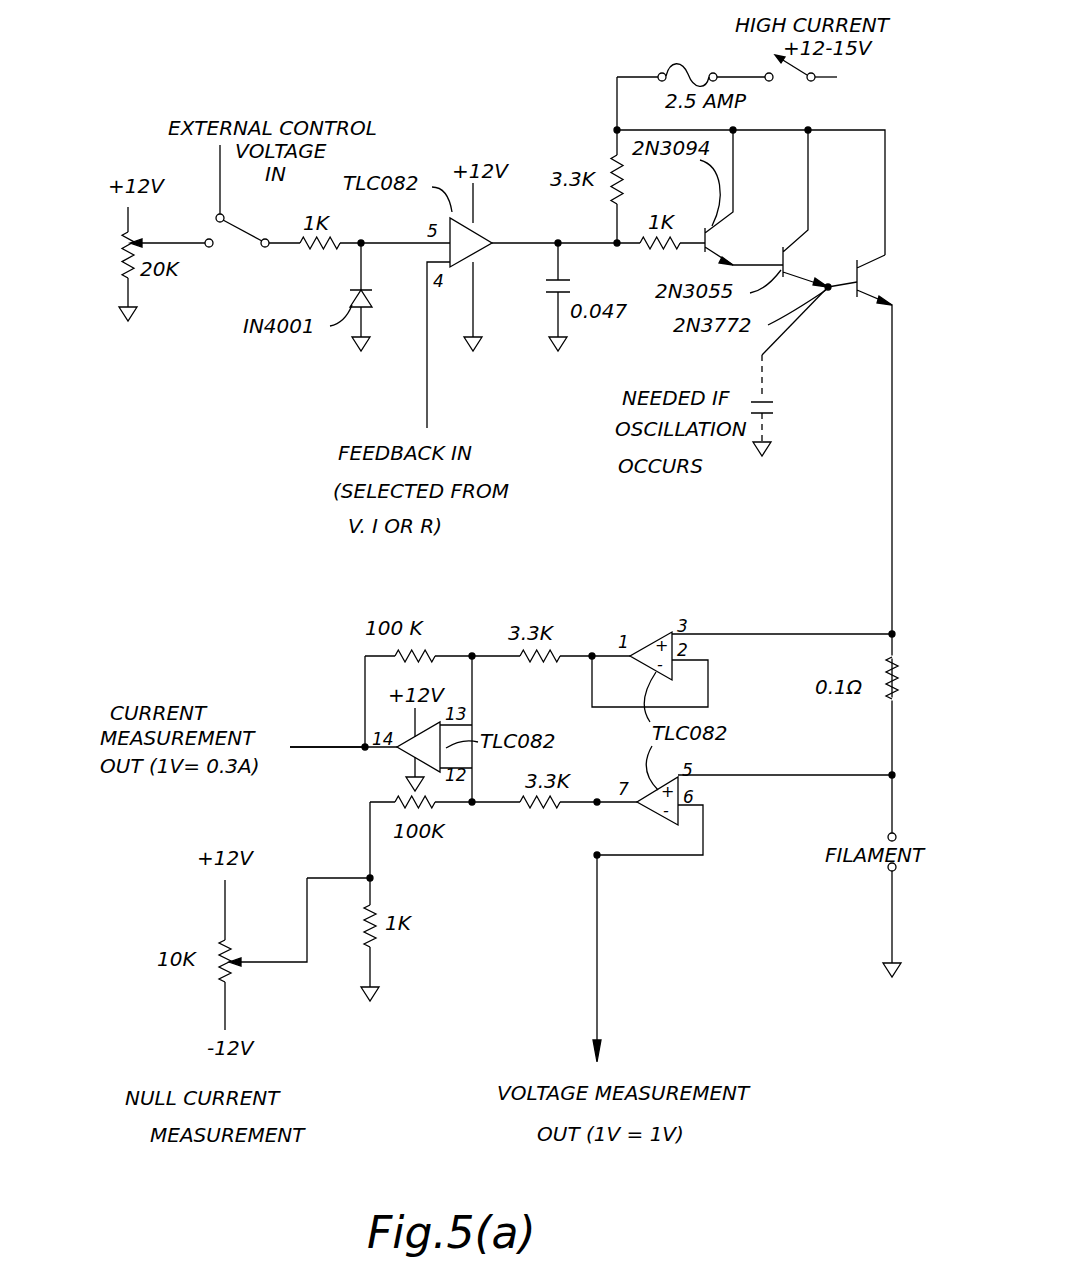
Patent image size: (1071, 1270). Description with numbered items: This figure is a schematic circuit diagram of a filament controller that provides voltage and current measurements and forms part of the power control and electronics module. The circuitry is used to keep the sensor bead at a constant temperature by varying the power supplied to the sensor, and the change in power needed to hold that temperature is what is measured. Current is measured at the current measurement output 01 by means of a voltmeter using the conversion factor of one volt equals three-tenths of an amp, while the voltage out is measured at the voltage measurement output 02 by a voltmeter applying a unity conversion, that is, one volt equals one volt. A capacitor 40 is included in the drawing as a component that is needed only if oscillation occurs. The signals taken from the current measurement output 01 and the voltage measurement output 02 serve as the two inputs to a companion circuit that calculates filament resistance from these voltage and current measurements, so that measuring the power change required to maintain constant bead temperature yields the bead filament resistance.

The capacitor (needed if oscillation occurs) 40 is at (774, 410).
The current measurement output 01 is at (312, 735).
The voltage measurement output 02 is at (624, 958).